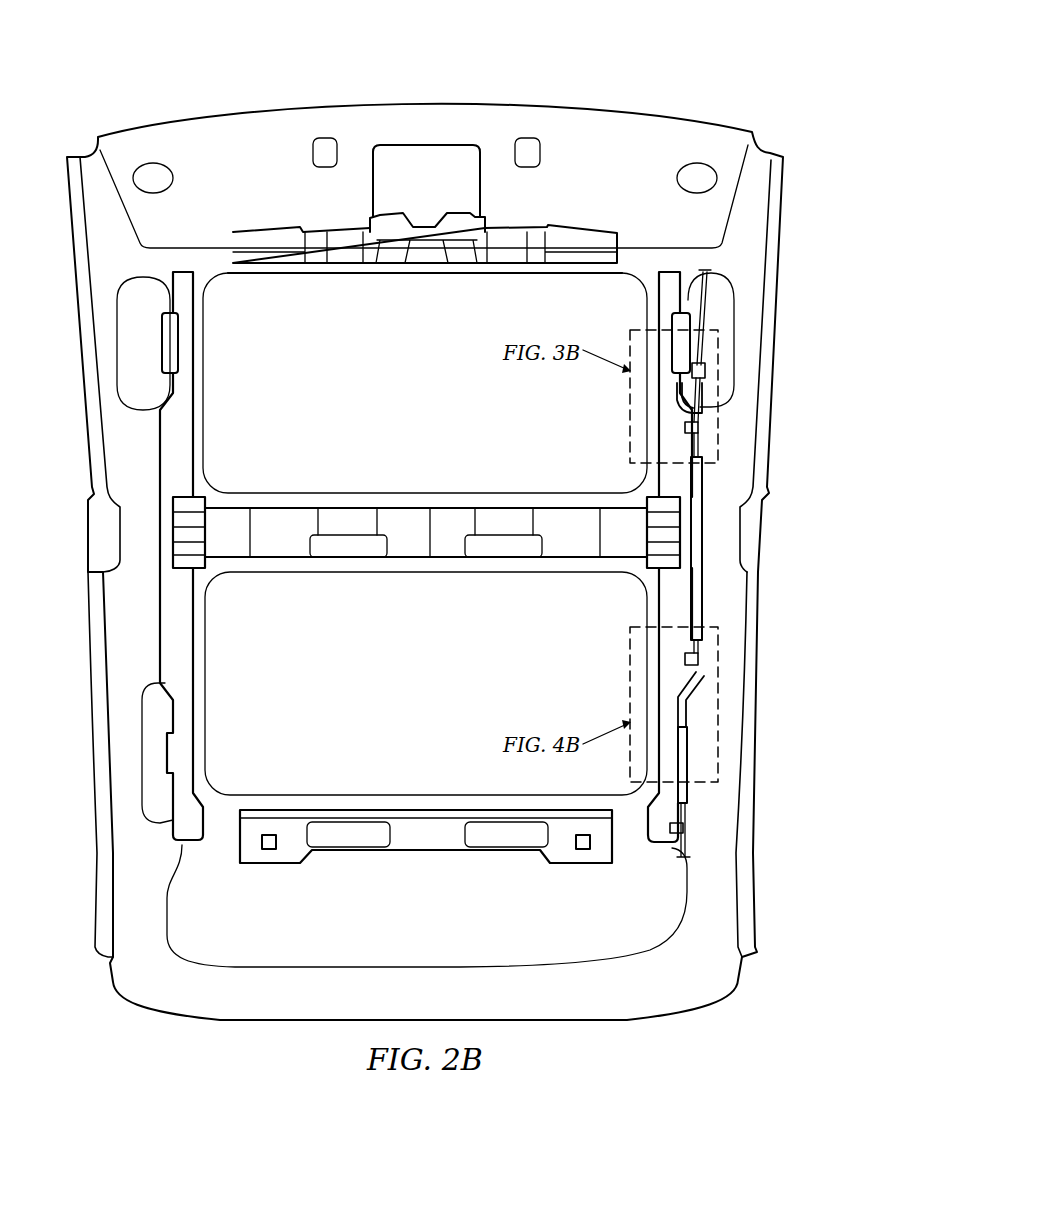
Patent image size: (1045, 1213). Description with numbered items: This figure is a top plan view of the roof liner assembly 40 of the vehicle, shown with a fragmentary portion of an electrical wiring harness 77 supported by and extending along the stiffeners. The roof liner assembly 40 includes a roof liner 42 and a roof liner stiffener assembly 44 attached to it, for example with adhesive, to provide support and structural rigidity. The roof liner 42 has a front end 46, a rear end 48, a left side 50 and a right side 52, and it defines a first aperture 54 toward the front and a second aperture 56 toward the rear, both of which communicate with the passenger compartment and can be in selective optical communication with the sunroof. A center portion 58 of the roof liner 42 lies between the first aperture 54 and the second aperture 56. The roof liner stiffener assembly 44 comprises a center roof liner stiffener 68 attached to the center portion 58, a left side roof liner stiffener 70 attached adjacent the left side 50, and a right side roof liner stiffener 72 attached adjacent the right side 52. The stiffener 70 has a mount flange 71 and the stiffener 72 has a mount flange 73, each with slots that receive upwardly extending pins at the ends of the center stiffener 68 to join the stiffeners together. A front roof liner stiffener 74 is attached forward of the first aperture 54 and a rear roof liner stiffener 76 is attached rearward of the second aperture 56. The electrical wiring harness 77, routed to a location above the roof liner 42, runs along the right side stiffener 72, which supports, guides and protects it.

The roof liner assembly 40 is at (650, 61).
The roof liner 42 is at (773, 282).
The roof liner stiffener assembly 44 is at (574, 224).
The front end 46 is at (238, 112).
The rear end 48 is at (555, 1023).
The left side 50 is at (83, 372).
The right side 52 is at (757, 787).
The first aperture 54 is at (413, 402).
The second aperture 56 is at (413, 695).
The center portion 58 is at (448, 499).
The roof liner stiffener 68 is at (348, 507).
The roof liner stiffener 70 is at (160, 607).
The mount flange 71 is at (205, 548).
The roof liner stiffener 72 is at (658, 595).
The mount flange 73 is at (647, 517).
The roof liner stiffener 74 is at (277, 229).
The roof liner stiffener 76 is at (347, 848).
The electrical wiring harness 77 is at (700, 312).